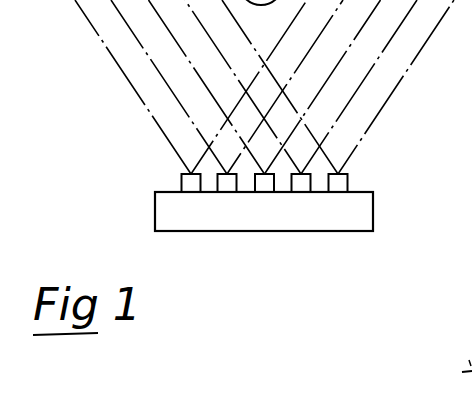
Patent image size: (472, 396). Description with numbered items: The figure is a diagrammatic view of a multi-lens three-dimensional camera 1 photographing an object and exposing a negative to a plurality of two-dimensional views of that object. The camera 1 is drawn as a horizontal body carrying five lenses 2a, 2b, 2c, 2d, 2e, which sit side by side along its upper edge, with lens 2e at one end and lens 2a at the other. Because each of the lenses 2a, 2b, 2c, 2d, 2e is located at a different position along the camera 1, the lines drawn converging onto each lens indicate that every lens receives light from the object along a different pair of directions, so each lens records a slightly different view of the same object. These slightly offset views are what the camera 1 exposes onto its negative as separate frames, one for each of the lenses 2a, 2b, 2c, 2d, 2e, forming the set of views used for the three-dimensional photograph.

The 3-D camera 1 is at (362, 213).
The lens 2a is at (338, 186).
The lens 2b is at (300, 186).
The lens 2c is at (264, 186).
The lens 2d is at (228, 186).
The lens 2e is at (190, 186).